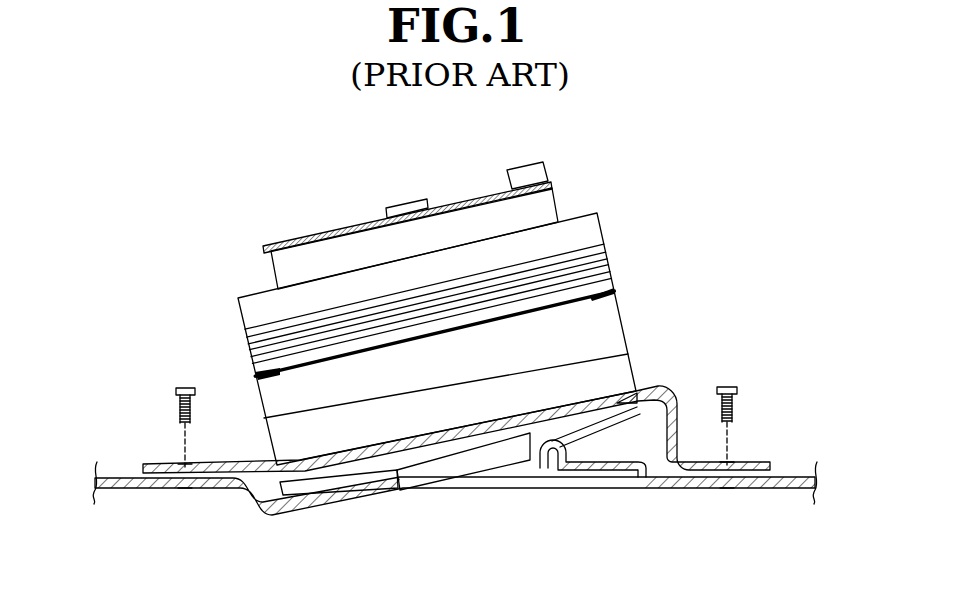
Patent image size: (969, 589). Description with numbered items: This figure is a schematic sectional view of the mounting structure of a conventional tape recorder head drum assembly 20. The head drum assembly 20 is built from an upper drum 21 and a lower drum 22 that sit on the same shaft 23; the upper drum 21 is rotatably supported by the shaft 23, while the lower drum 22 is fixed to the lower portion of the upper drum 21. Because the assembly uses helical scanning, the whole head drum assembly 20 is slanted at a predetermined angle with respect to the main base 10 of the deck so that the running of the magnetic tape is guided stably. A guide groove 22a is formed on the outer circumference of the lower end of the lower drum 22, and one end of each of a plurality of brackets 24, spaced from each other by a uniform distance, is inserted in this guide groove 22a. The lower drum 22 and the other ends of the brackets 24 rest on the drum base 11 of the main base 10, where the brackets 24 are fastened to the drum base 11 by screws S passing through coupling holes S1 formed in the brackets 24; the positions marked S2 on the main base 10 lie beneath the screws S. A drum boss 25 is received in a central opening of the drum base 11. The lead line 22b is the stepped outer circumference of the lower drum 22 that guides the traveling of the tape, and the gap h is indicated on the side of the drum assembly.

The main base 10 is at (793, 490).
The drum base 11 is at (547, 471).
The head drum assembly 20 is at (494, 303).
The upper drum 21 is at (590, 232).
The lower drum 22 is at (628, 323).
The guide groove 22a is at (456, 477).
The lead line 22b is at (590, 357).
The shaft 23 is at (401, 206).
The bracket 24 is at (218, 475).
The drum boss 25 is at (433, 472).
The screw S is at (178, 387).
The coupling hole S1 is at (187, 463).
The screw hole in base plate S2 is at (185, 490).
The gap h is at (614, 291).